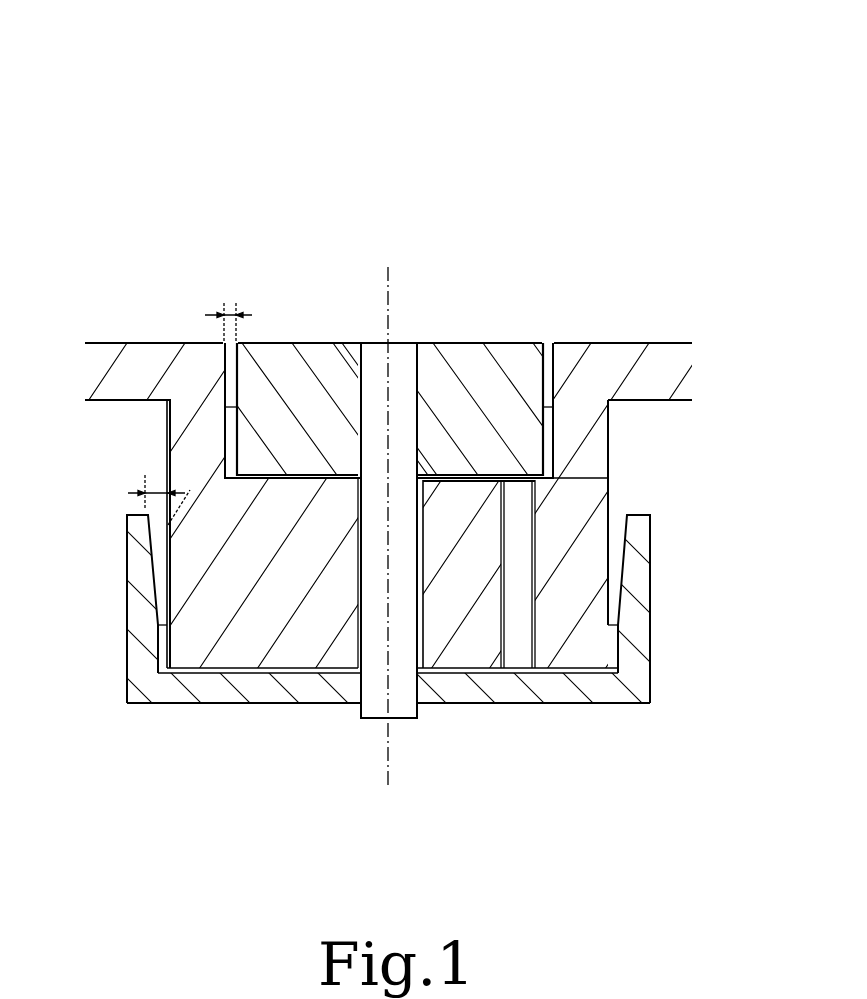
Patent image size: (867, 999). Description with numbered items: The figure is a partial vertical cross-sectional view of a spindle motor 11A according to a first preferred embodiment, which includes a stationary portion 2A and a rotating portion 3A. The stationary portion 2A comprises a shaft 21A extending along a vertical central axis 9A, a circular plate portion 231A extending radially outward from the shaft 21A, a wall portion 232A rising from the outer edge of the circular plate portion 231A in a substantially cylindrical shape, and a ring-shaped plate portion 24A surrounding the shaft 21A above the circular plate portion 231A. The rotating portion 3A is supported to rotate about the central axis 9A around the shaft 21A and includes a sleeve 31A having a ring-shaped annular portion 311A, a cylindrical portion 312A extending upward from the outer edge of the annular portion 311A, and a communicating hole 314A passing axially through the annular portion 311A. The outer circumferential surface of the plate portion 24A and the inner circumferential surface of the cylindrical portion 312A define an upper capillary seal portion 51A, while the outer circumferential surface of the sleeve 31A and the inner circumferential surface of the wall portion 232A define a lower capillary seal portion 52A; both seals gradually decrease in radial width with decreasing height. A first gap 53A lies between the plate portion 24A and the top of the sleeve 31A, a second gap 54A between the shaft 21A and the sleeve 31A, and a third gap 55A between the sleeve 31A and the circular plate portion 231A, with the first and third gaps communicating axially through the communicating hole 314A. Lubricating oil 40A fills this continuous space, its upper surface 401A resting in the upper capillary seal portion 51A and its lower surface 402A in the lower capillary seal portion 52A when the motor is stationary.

The spindle motor 11A is at (180, 112).
The central axis 9A is at (390, 289).
The rotating portion 3A is at (645, 332).
The upper surface 401A is at (548, 407).
The sleeve 31A is at (627, 534).
The cylindrical portion 312A is at (572, 430).
The annular portion 311A is at (547, 507).
The communicating hole 314A is at (513, 552).
The shaft 21A is at (400, 692).
The plate portion 24A is at (294, 385).
The upper capillary seal portion 51A is at (226, 385).
The first gap 53A is at (518, 467).
The lower capillary seal portion 52A is at (163, 595).
The second gap 54A is at (423, 568).
The third gap 55A is at (543, 670).
The stationary portion 2A is at (420, 688).
The circular plate portion 231A is at (257, 705).
The wall portion 232A is at (138, 568).
The lubricating oil 40A is at (671, 645).
The lower surface 402A is at (627, 615).